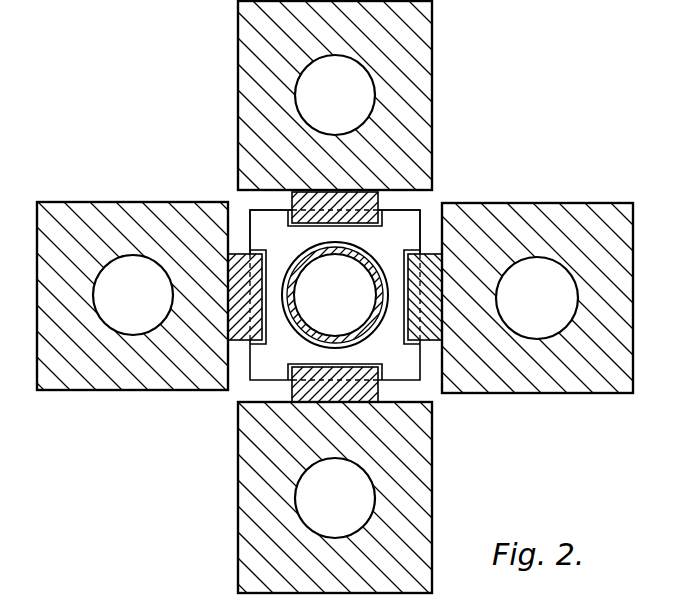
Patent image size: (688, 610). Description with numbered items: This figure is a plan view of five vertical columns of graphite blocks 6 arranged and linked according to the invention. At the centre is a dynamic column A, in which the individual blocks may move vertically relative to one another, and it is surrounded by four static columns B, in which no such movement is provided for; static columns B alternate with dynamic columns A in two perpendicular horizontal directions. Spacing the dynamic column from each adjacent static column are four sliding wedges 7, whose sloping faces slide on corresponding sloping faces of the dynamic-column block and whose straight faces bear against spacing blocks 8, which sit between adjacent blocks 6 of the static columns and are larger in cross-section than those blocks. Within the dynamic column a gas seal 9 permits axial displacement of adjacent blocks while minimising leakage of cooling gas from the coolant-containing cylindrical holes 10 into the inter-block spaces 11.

The graphite block 6 is at (417, 212).
The sliding wedge 7 is at (428, 340).
The spacing block 8 is at (73, 378).
The gas seal 9 is at (307, 333).
The cylindrical hole 10 is at (130, 328).
The inter-block space 11 is at (430, 222).
The dynamic column A is at (248, 383).
The static column B is at (145, 200).